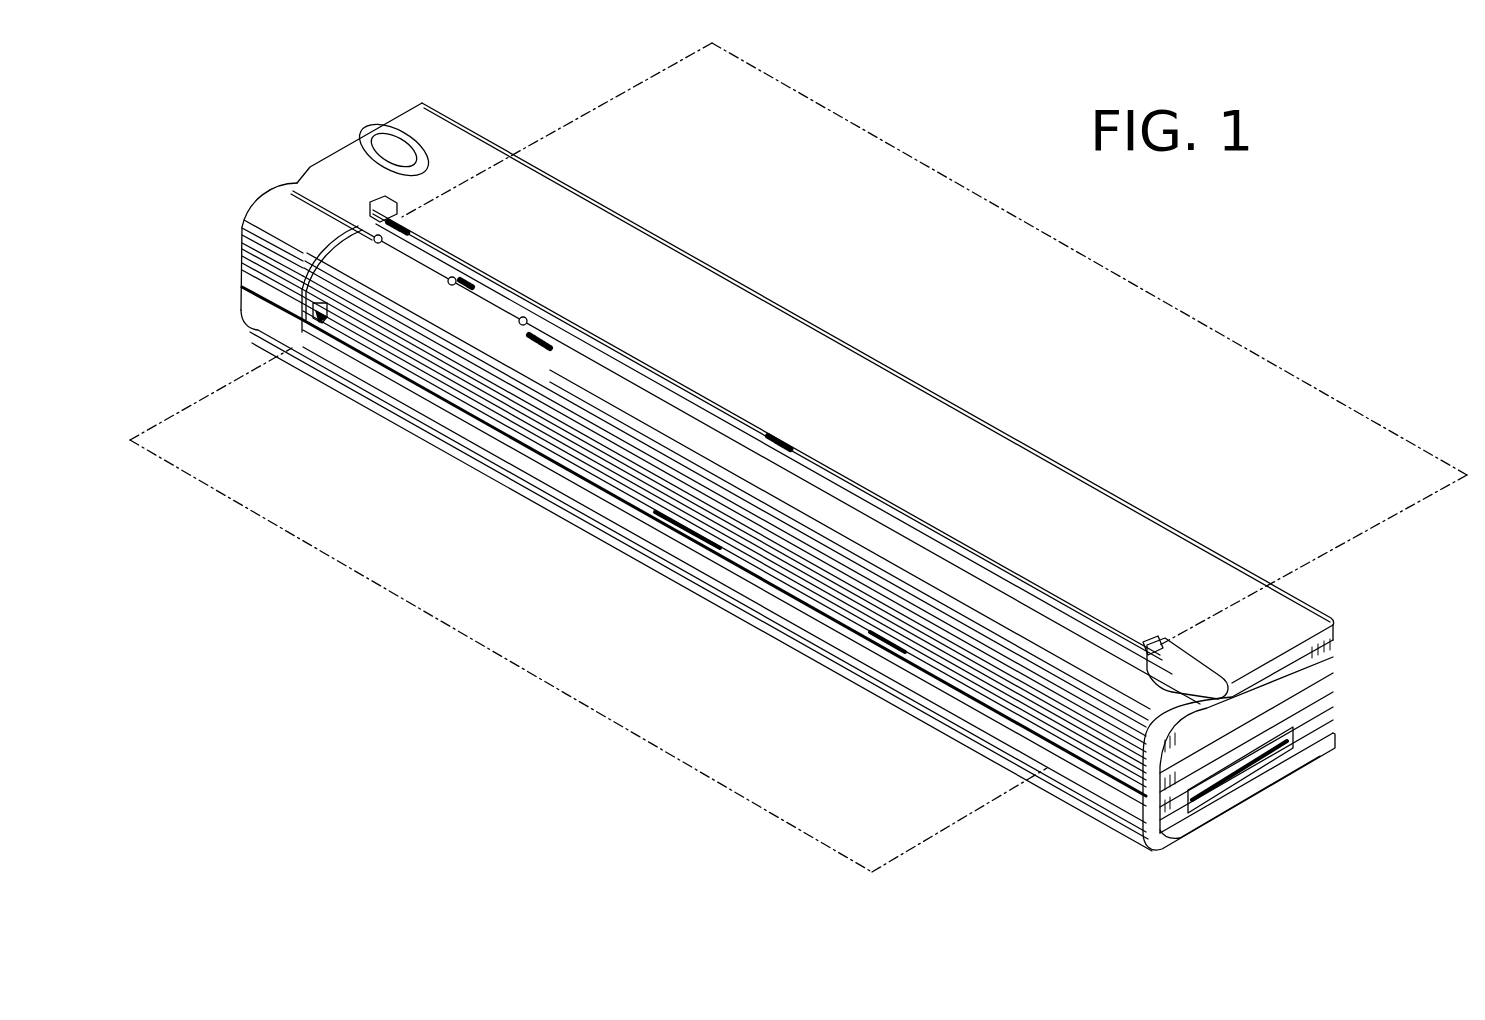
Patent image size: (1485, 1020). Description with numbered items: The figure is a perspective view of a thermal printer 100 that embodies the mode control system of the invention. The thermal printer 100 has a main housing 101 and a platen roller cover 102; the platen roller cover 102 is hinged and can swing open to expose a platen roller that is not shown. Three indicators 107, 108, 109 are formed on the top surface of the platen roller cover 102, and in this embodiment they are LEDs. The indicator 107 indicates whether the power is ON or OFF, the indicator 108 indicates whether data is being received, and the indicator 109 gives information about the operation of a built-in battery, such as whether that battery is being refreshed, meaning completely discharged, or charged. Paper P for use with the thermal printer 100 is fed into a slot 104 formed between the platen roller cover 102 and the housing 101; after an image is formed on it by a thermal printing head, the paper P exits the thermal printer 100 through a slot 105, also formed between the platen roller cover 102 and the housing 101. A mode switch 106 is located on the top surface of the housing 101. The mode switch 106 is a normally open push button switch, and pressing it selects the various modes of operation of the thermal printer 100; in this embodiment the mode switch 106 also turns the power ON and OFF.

The thermal printer 100 is at (1356, 696).
The main housing 101 is at (465, 143).
The platen roller cover 102 is at (850, 587).
The slot 104 is at (767, 433).
The slot 105 is at (633, 496).
The mode switch 106 is at (378, 134).
The indicator 107 is at (388, 238).
The indicator 108 is at (458, 281).
The indicator 109 is at (530, 321).
The recording paper P is at (1212, 323).